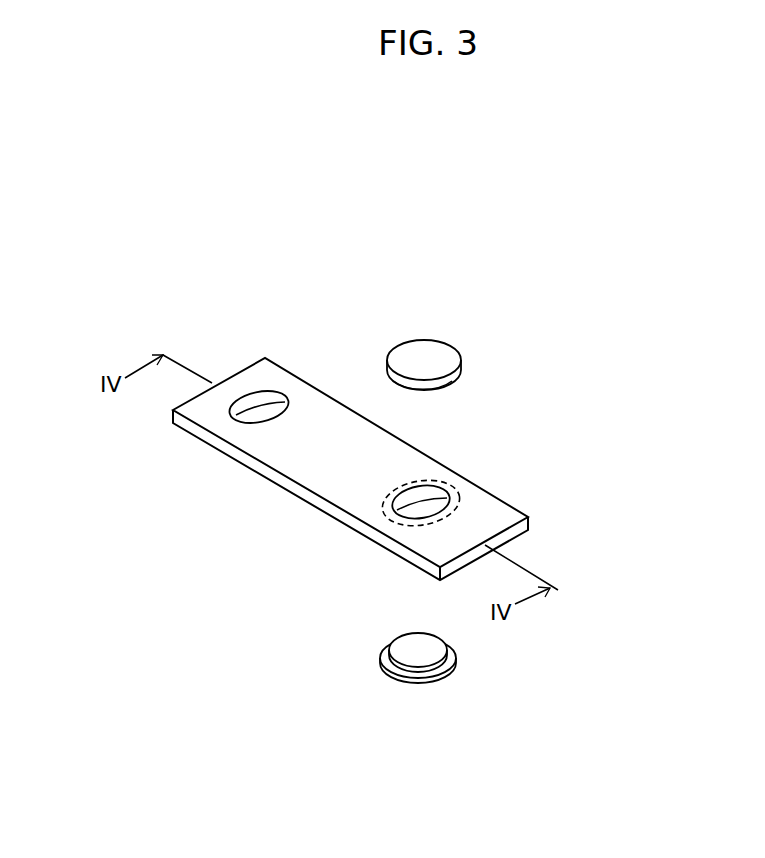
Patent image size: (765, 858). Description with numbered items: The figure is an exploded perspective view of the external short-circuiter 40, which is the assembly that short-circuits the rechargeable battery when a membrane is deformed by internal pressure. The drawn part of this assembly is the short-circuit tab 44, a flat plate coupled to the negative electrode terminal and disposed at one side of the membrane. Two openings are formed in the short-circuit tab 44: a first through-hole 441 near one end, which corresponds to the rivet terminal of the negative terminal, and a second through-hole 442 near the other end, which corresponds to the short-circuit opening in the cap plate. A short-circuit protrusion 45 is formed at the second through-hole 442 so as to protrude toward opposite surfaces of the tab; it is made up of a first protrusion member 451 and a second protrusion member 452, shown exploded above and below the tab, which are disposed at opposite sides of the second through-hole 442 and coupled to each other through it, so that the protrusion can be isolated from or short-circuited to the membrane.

The external short-circuiter 40 is at (392, 237).
The short-circuit tab 44 is at (303, 458).
The first through-hole 441 is at (267, 401).
The second through-hole 442 is at (435, 497).
The short-circuit protrusion 45 is at (597, 377).
The first protrusion member 451 is at (453, 670).
The second protrusion member 452 is at (445, 356).